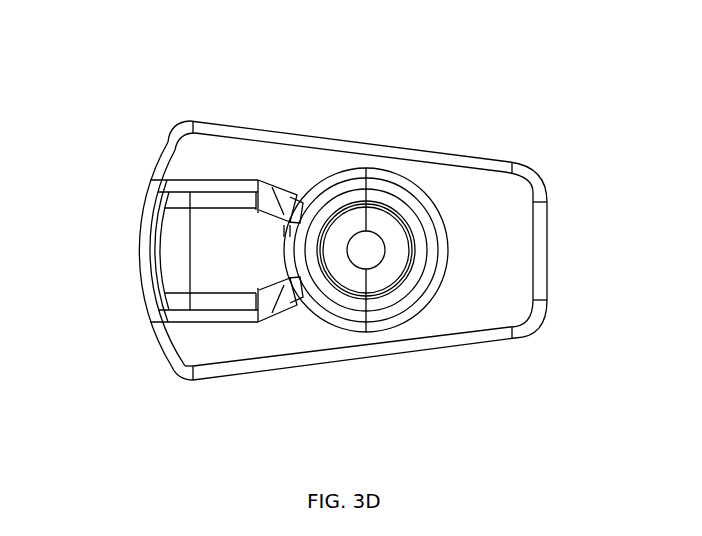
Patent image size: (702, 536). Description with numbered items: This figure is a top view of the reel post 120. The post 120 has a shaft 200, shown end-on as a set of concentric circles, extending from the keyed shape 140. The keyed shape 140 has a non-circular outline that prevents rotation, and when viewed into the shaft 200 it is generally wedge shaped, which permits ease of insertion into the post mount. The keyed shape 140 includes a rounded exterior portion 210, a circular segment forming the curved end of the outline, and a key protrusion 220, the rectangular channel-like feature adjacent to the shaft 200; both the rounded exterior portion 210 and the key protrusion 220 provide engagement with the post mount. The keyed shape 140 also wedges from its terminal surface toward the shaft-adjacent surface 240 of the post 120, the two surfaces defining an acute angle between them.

The post 120 is at (177, 72).
The keyed shape 140 is at (265, 348).
The shaft 200 is at (330, 193).
The rounded exterior portion 210 is at (157, 345).
The key protrusion 220 is at (208, 236).
The shaft-adjacent surface 240 is at (472, 207).